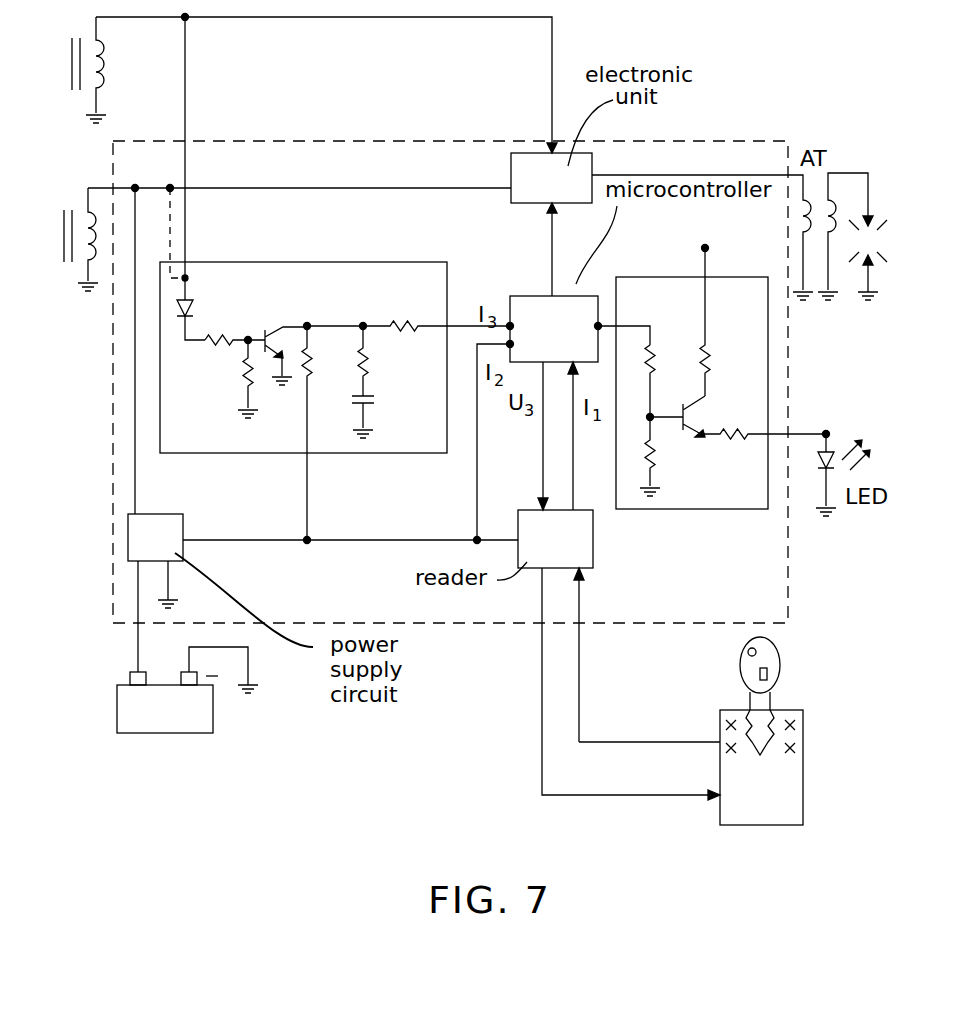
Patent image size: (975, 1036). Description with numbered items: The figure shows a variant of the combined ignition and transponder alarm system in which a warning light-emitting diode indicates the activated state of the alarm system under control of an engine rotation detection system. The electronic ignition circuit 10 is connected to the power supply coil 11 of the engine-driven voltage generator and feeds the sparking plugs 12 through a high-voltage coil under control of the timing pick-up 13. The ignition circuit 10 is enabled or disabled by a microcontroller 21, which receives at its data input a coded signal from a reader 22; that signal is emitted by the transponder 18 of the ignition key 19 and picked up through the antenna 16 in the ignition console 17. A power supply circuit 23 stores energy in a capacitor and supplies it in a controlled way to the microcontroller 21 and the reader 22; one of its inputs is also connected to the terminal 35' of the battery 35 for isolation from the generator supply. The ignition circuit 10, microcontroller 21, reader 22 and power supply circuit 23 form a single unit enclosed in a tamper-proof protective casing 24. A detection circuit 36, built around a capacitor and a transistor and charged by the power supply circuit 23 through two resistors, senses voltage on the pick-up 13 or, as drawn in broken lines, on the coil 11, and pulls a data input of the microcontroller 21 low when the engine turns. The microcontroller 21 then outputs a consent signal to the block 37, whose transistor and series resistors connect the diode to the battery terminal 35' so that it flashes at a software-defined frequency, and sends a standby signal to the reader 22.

The electronic ignition circuit 10 is at (569, 190).
The power supply coil 11 is at (68, 239).
The sparking plugs 12 is at (883, 258).
The timing pick-up 13 is at (72, 70).
The antenna 16 is at (803, 722).
The ignition console 17 is at (788, 799).
The transponder 18 is at (770, 674).
The ignition key 19 is at (742, 665).
The microcontroller 21 is at (570, 343).
The reader 22 is at (571, 553).
The power supply circuit 23 is at (171, 550).
The protective casing 24 is at (352, 602).
The battery 35 is at (183, 690).
The battery terminal 35' is at (409, 441).
The engine rotation detection circuit 36 is at (213, 442).
The LED control block 37 is at (756, 492).